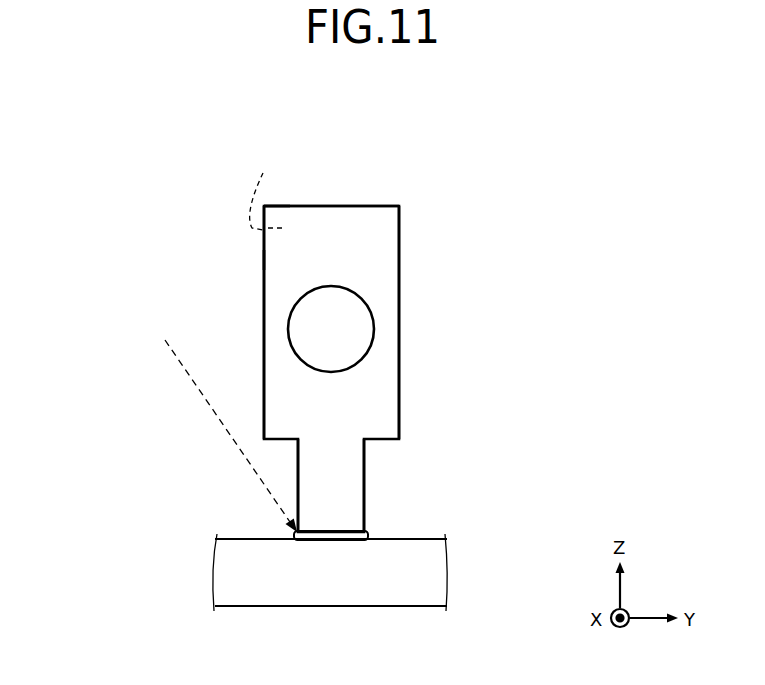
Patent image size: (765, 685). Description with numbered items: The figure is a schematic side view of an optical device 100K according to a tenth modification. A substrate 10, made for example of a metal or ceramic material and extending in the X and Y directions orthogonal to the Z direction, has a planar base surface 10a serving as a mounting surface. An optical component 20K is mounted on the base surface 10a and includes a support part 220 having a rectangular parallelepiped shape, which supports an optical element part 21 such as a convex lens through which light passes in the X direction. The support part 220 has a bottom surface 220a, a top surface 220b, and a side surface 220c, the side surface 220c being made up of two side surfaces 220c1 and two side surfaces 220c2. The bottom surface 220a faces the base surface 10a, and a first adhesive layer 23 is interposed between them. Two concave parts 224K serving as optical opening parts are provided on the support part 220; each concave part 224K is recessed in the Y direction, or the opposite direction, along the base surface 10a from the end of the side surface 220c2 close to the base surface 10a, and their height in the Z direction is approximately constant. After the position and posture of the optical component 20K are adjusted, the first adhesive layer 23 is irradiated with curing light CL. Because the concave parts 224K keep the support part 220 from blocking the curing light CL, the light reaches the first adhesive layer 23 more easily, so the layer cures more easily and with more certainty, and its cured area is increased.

The optical device 100K is at (112, 162).
The support part 220 is at (415, 276).
The top surface 220b is at (347, 206).
The side surface 220c is at (305, 288).
The side surface 220c1 is at (290, 218).
The side surface 220c2 is at (399, 224).
The bottom surface 220a is at (333, 540).
The optical component 20K is at (252, 256).
The optical element part 21 is at (300, 328).
The concave part 224K is at (298, 472).
The curing light CL is at (178, 363).
The substrate 10 is at (465, 576).
The base surface 10a is at (397, 540).
The first adhesive layer 23 is at (292, 540).